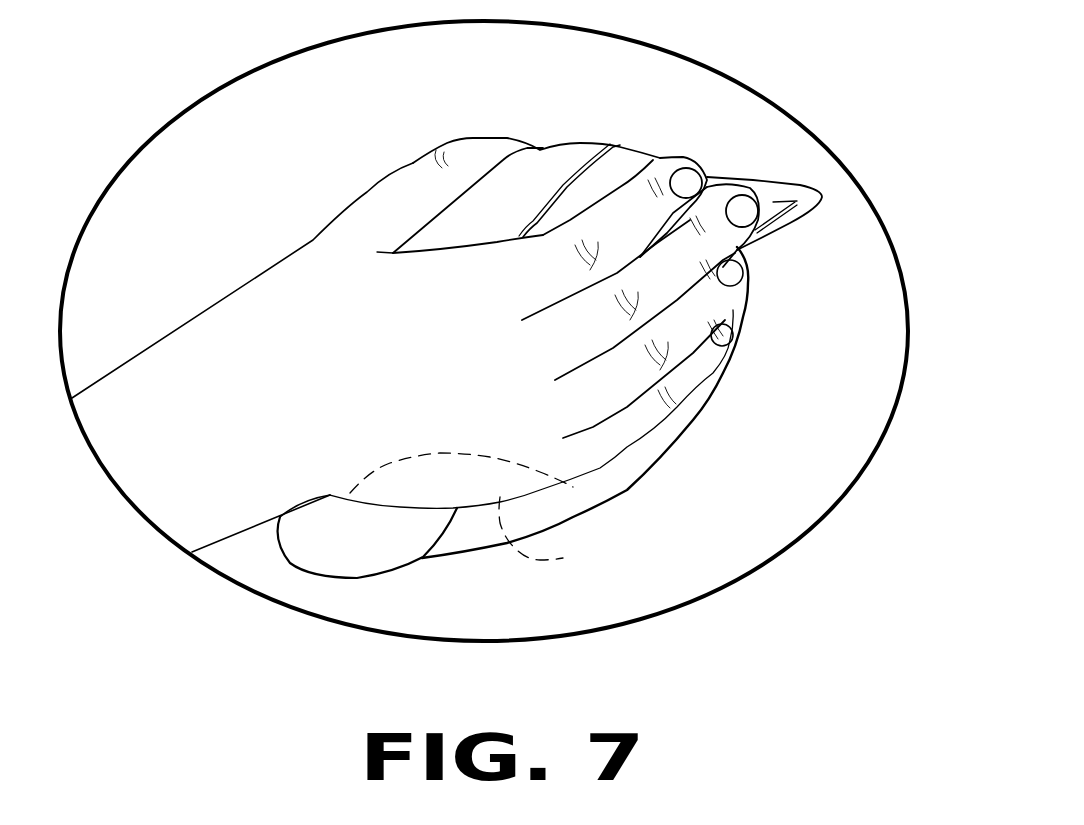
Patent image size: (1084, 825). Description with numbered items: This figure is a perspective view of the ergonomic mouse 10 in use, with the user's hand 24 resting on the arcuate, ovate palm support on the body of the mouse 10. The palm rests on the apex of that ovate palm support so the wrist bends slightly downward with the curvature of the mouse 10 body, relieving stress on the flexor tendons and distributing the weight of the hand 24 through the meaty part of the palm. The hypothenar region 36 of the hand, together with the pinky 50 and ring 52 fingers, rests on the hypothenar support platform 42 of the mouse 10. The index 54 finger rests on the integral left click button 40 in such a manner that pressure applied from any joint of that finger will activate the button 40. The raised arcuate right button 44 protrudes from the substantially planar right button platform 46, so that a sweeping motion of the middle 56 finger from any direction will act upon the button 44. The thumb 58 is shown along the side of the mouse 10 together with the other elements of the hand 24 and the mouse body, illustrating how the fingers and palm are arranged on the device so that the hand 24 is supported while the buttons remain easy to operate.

The ergonomic mouse 10 is at (347, 570).
The human hand 24 is at (217, 387).
The hypothenar region 36 is at (587, 557).
The left click button 40 is at (600, 162).
The hypothenar support platform 42 is at (628, 483).
The raised arcuate right button 44 is at (780, 200).
The right button platform 46 is at (763, 180).
The pinky finger 50 is at (740, 383).
The ring finger 52 is at (727, 297).
The index finger 54 is at (672, 163).
The middle finger 56 is at (737, 253).
The thumb 58 is at (405, 180).